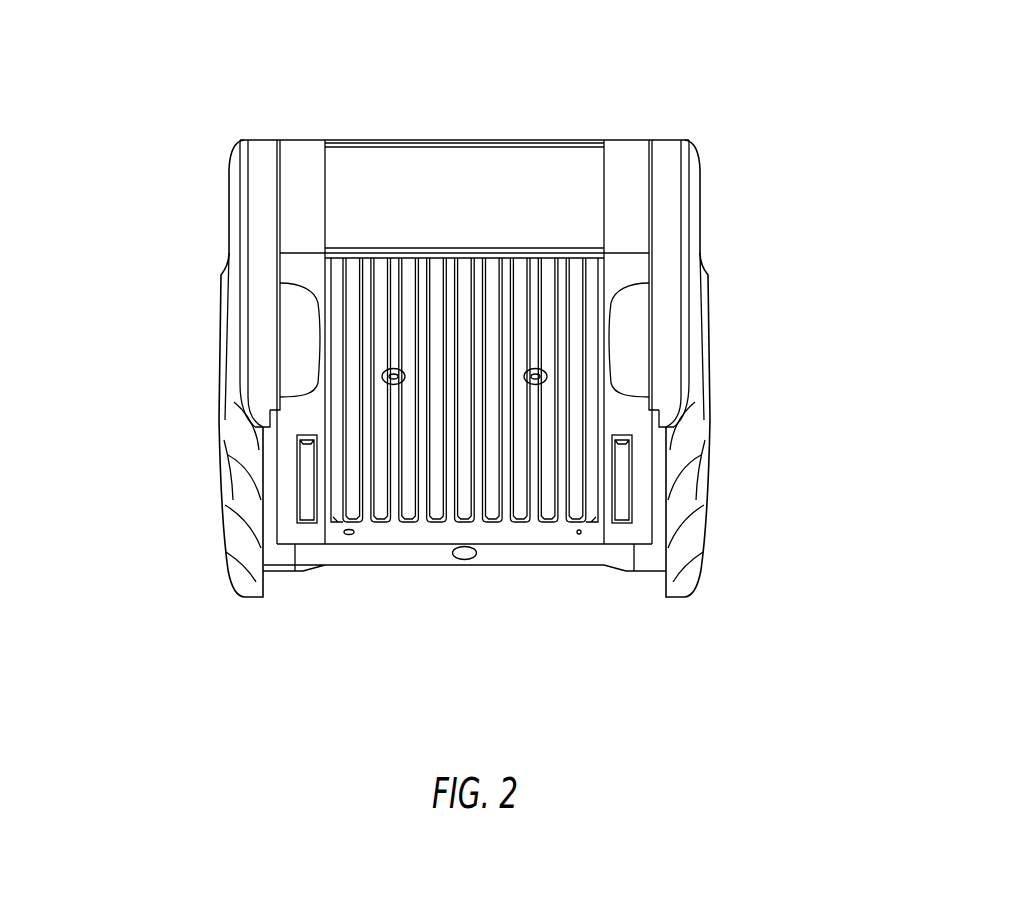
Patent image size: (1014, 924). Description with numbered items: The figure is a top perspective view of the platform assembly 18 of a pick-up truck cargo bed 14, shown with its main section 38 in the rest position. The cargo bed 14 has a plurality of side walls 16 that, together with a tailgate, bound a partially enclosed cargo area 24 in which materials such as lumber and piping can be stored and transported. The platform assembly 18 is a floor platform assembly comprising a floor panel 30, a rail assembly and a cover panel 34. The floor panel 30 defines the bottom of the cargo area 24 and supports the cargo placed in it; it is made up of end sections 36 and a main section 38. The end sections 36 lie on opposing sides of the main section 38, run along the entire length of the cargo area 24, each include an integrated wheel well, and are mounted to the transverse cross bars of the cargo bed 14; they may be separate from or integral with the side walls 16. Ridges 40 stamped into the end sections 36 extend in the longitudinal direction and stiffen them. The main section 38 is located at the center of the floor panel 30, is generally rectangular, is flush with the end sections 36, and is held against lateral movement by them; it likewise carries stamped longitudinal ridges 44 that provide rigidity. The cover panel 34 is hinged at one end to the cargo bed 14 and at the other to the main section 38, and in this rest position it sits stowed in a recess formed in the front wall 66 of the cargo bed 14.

The cargo bed 14 is at (150, 123).
The side walls 16 is at (260, 278).
The platform assembly 18 is at (430, 585).
The cargo area 24 is at (624, 270).
The floor panel 30 is at (375, 560).
The cover panel 34 is at (431, 160).
The end sections 36 is at (306, 468).
The main section 38 is at (492, 468).
The ridges 40 is at (306, 506).
The ridges 44 is at (545, 490).
The front wall 66 is at (307, 177).